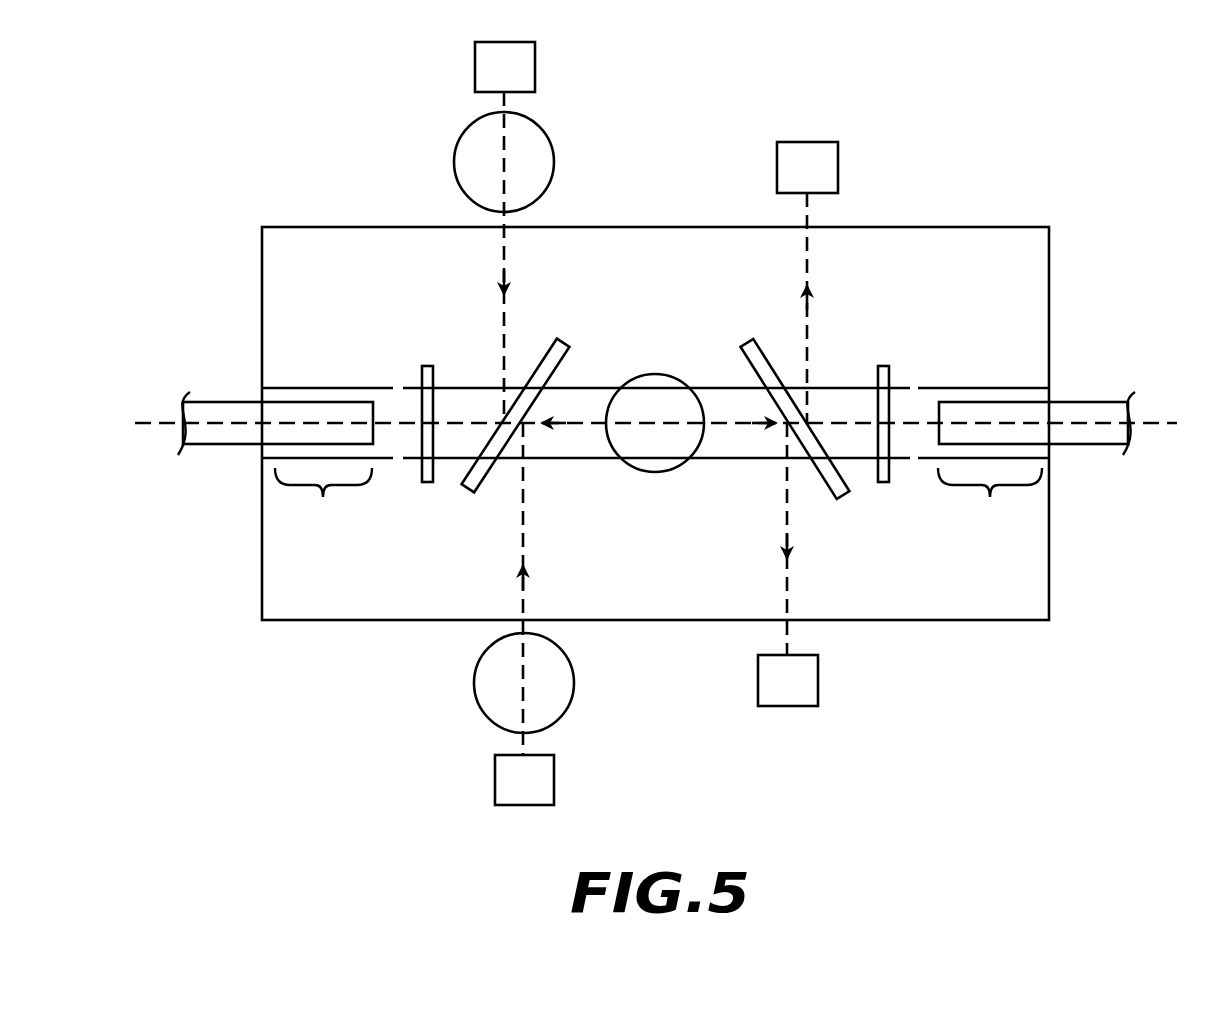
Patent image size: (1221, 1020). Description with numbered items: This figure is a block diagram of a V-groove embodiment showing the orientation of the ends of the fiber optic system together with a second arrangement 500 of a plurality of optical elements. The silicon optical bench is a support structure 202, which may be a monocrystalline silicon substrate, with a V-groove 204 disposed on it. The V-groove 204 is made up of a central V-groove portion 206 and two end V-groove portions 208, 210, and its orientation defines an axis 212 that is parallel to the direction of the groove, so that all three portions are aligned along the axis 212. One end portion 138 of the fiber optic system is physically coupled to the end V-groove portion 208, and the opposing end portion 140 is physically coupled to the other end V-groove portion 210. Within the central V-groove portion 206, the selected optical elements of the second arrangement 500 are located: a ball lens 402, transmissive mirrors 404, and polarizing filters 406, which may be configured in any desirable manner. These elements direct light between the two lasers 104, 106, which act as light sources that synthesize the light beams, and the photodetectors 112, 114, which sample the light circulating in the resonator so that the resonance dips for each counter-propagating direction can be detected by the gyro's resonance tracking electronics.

The laser 104 is at (521, 80).
The laser 106 is at (541, 793).
The photodetector 112 is at (804, 694).
The photodetector 114 is at (823, 181).
The end portion 138 is at (215, 368).
The opposing end portion 140 is at (1075, 402).
The support structure 202 is at (322, 227).
The V-groove 204 is at (340, 388).
The central V-groove portion 206 is at (375, 545).
The end V-groove portion 208 is at (323, 502).
The end V-groove portion 210 is at (990, 502).
The axis 212 is at (165, 458).
The ball lens 402 is at (462, 130).
The transmissive mirror 404 is at (555, 345).
The polarizing filter 406 is at (428, 366).
The second arrangement 500 is at (985, 193).